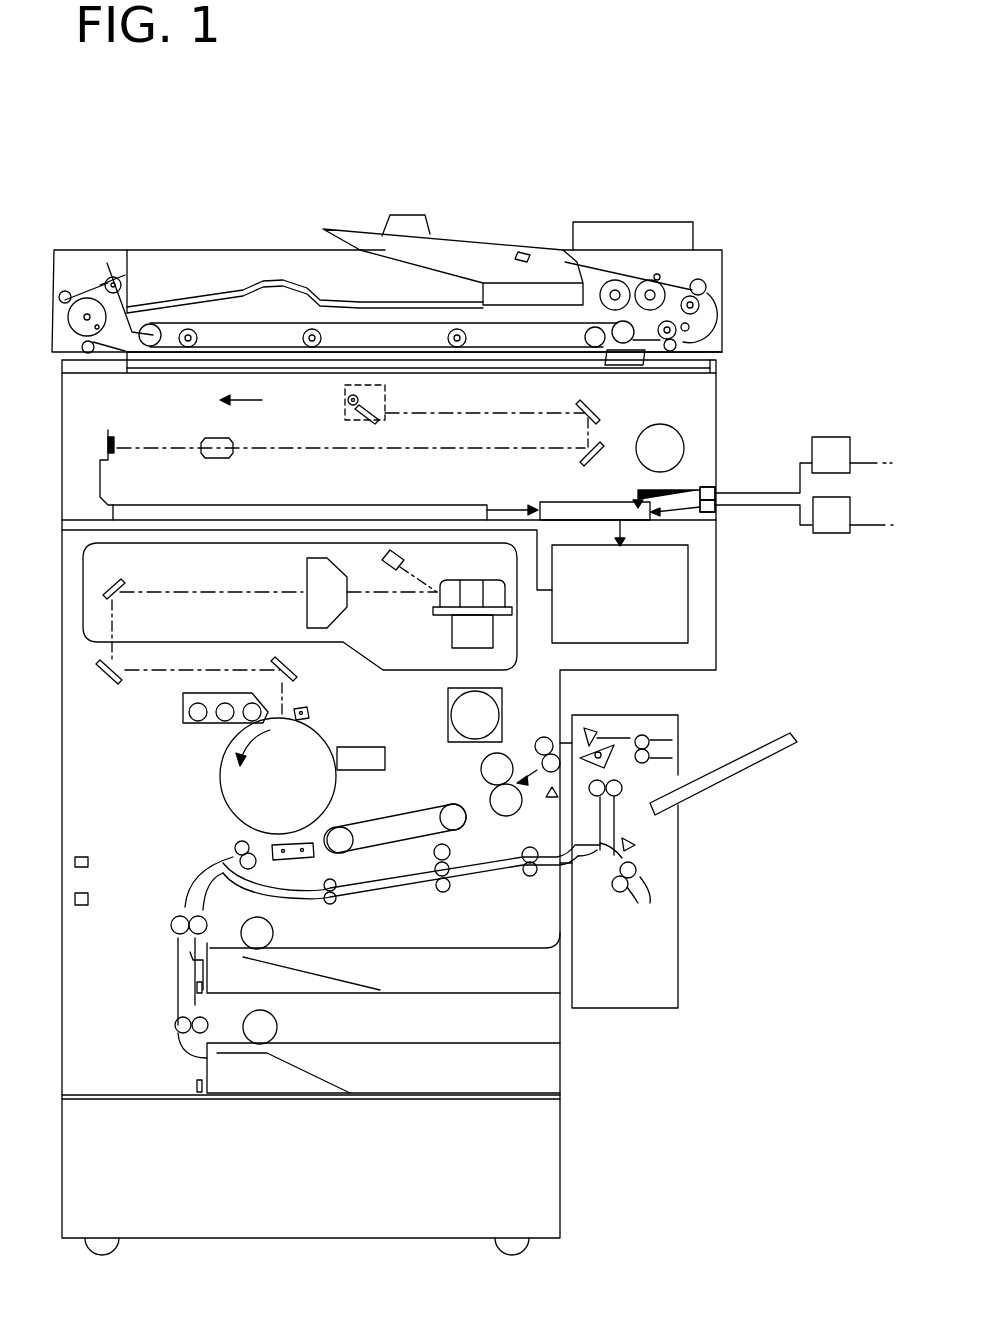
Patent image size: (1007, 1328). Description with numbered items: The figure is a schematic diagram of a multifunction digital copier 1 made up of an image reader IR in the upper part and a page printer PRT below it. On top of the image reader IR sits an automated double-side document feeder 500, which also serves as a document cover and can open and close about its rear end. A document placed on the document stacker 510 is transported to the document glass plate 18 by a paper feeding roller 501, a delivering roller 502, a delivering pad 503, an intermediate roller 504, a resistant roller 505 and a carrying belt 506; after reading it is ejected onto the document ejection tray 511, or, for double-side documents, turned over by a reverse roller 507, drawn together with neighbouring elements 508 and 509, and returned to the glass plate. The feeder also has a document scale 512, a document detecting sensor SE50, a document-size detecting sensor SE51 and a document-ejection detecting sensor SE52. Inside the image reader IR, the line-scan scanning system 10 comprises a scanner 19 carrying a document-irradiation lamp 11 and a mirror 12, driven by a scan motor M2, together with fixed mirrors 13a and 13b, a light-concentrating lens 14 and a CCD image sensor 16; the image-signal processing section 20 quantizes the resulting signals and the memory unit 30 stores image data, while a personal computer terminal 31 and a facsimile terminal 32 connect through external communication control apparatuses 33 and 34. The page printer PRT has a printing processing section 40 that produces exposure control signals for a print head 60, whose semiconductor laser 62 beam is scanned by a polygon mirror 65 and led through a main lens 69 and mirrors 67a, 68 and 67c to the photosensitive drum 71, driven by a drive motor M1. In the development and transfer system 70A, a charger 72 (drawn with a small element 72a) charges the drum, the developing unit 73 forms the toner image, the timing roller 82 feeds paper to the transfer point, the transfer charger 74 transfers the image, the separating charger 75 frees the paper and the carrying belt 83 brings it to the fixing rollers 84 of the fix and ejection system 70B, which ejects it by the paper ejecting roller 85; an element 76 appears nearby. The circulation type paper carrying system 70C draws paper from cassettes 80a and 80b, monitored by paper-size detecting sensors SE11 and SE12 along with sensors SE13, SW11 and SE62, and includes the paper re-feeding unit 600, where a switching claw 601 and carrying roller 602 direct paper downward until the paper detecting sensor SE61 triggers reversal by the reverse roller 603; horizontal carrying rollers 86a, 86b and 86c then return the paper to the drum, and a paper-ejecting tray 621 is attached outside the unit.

The digital copier 1 is at (312, 190).
The automated double-side document feeder (ADFR) 500 is at (251, 250).
The paper feeding roller 501 is at (613, 283).
The delivering roller 502 is at (650, 283).
The delivering pad 503 is at (660, 274).
The intermediate roller 504 is at (706, 282).
The resistant roller 505 is at (678, 346).
The carrying belt 506 is at (535, 362).
The reverse roller 507 is at (80, 292).
The roller 508 is at (98, 283).
The roller 509 is at (117, 277).
The document stacker 510 is at (428, 235).
The document ejection tray 511 is at (184, 300).
The document scale 512 is at (633, 364).
The document detecting sensor SE50 is at (515, 252).
The document-size detecting sensor SE51 is at (700, 320).
The document-ejection detecting sensor SE52 is at (111, 443).
The scanning system 10 is at (322, 437).
The document-irradiation lamp 11 is at (345, 396).
The mirror 12 is at (383, 420).
The fixed mirror 13a is at (583, 403).
The fixed mirror 13b is at (592, 458).
The light-concentrating lens 14 is at (215, 462).
The image sensor 16 is at (118, 440).
The document glass plate 18 is at (475, 362).
The scanner 19 is at (360, 400).
The image-signal processing section 20 is at (405, 505).
The memory unit 30 is at (545, 503).
The personal computer terminal 31 is at (717, 492).
The facsimile terminal 32 is at (717, 506).
The communication control apparatus 33 is at (832, 437).
The communication control apparatus 34 is at (832, 533).
The printing processing section 40 is at (682, 565).
The image reader IR is at (777, 440).
The page printer PRT is at (780, 647).
The drive motor M1 is at (475, 715).
The scan motor M2 is at (660, 448).
The print head 60 is at (257, 567).
The semiconductor laser 62 is at (385, 553).
The polygon mirror 65 is at (470, 603).
The mirror 67a is at (118, 583).
The mirror 67c is at (298, 673).
The mirror 68 is at (103, 685).
The main lens 69 is at (307, 606).
The development and transfer system 70A is at (175, 765).
The fix and ejection system 70B is at (458, 795).
The circulation type paper carrying system 70C is at (428, 938).
The photosensitive drum 71 is at (302, 802).
The charger 72 is at (312, 705).
The charger 72a is at (310, 714).
The developing unit 73 is at (183, 707).
The toner image transfer charger 74 is at (280, 860).
The printing paper separating charger 75 is at (307, 857).
The developer supply 76 is at (385, 750).
The timing roller 82 is at (238, 843).
The carrying belt 83 is at (385, 825).
The fixing rollers 84 is at (455, 848).
The paper ejecting roller 85 is at (540, 745).
The horizontal carrying roller 86a is at (532, 875).
The horizontal carrying roller 86b is at (447, 892).
The horizontal carrying roller 86c is at (330, 905).
The cassette 80a is at (482, 965).
The cassette 80b is at (398, 1052).
The paper-size detecting sensor SE11 is at (197, 987).
The paper-size detecting sensor SE12 is at (196, 1085).
The sensor SE13 is at (90, 862).
The switch SW11 is at (90, 899).
The paper detecting sensor SE61 is at (635, 843).
The sensor SE62 is at (552, 793).
The paper re-feeding unit 600 is at (678, 900).
The switching claw 601 is at (605, 738).
The carrying roller 602 is at (620, 785).
The reverse roller 603 is at (622, 895).
The paper-ejecting tray 621 is at (755, 755).